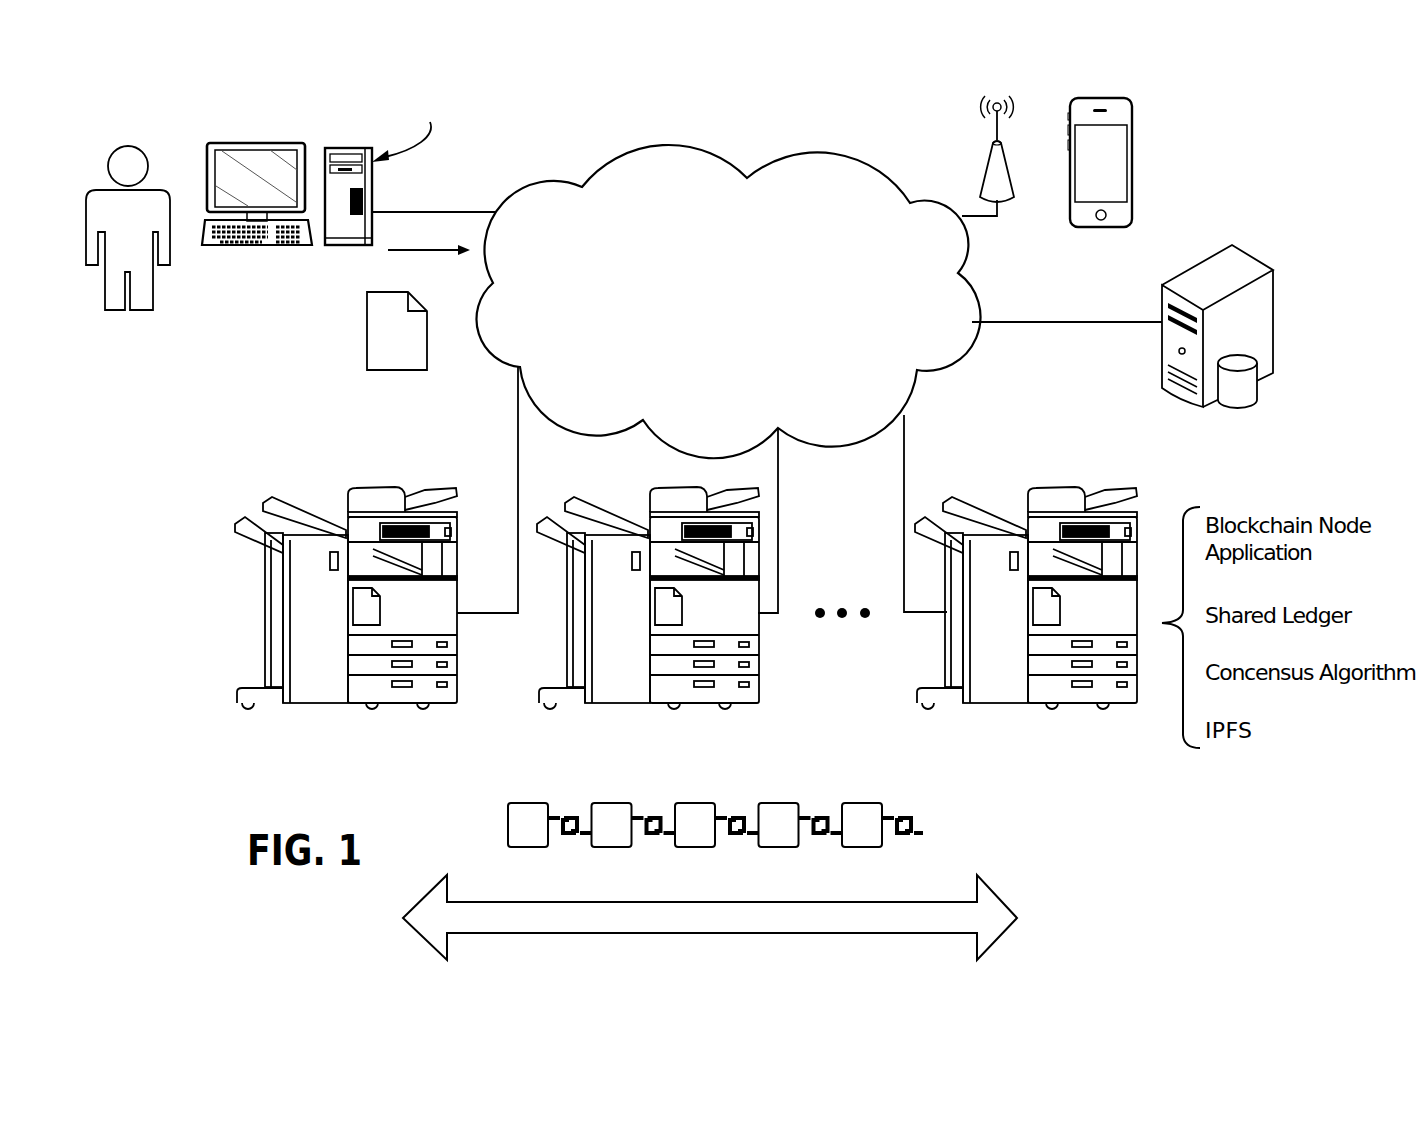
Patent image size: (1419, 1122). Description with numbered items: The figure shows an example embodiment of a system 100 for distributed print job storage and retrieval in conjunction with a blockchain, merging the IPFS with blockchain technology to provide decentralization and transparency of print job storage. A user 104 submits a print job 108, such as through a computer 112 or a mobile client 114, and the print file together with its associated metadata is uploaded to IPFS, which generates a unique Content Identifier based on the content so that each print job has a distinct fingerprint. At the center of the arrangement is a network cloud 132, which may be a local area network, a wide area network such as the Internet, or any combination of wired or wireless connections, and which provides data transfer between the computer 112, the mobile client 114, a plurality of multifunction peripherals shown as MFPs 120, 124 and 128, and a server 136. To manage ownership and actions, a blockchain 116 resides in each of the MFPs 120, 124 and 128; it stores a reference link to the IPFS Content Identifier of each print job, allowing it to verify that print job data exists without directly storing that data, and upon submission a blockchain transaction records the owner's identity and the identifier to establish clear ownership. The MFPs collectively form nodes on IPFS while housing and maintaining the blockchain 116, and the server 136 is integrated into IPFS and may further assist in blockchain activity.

The system 100 is at (1312, 100).
The user 104 is at (153, 286).
The print job 108 is at (367, 334).
The computer 112 is at (373, 195).
The mobile client 114 is at (1132, 135).
The blockchain 116 is at (882, 810).
The MFP 120 is at (440, 695).
The MFP 124 is at (738, 695).
The MFP 128 is at (1053, 500).
The network cloud 132 is at (783, 153).
The server 136 is at (1273, 308).